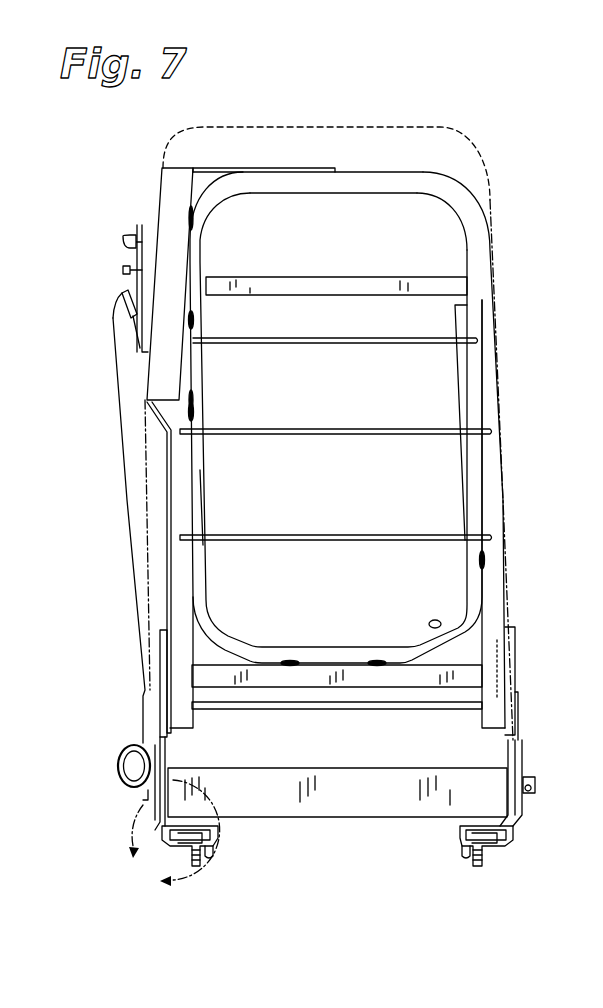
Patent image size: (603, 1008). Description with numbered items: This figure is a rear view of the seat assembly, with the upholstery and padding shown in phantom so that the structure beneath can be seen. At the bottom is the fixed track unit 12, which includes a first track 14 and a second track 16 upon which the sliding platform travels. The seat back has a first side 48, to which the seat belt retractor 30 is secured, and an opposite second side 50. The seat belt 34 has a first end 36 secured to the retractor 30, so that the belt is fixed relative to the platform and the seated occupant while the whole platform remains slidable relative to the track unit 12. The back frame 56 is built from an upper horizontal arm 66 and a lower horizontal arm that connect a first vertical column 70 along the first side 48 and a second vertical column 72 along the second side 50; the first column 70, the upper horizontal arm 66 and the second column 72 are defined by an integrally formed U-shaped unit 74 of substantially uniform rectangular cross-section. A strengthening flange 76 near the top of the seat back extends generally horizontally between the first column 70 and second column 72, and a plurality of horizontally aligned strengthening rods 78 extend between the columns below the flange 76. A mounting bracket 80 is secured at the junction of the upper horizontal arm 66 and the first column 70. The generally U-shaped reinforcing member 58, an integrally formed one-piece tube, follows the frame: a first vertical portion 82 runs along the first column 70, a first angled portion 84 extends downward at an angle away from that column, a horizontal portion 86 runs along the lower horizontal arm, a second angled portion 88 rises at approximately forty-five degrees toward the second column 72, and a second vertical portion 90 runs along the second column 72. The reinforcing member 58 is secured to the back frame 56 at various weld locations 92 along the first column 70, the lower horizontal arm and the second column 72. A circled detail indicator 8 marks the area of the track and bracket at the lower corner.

The detail view indicator 8 is at (174, 842).
The fixed track unit 12 is at (158, 836).
The first track 14 is at (500, 844).
The second track 16 is at (163, 830).
The seat belt retractor 30 is at (118, 752).
The seat belt 34 is at (124, 505).
The first end 36 is at (122, 778).
The first side 48 is at (143, 461).
The second side 50 is at (492, 236).
The back frame 56 is at (433, 167).
The reinforcing member 58 is at (210, 477).
The upper horizontal arm 66 is at (272, 168).
The first vertical column 70 is at (167, 542).
The second vertical column 72 is at (506, 513).
The U-shaped unit 74 is at (365, 171).
The strengthening flange 76 is at (345, 278).
The strengthening rods 78 is at (322, 339).
The mounting bracket 80 is at (143, 363).
The first vertical portion 82 is at (458, 357).
The first angled portion 84 is at (441, 624).
The horizontal portion 86 is at (329, 647).
The second angled portion 88 is at (192, 605).
The second vertical portion 90 is at (208, 510).
The weld locations 92 is at (195, 322).